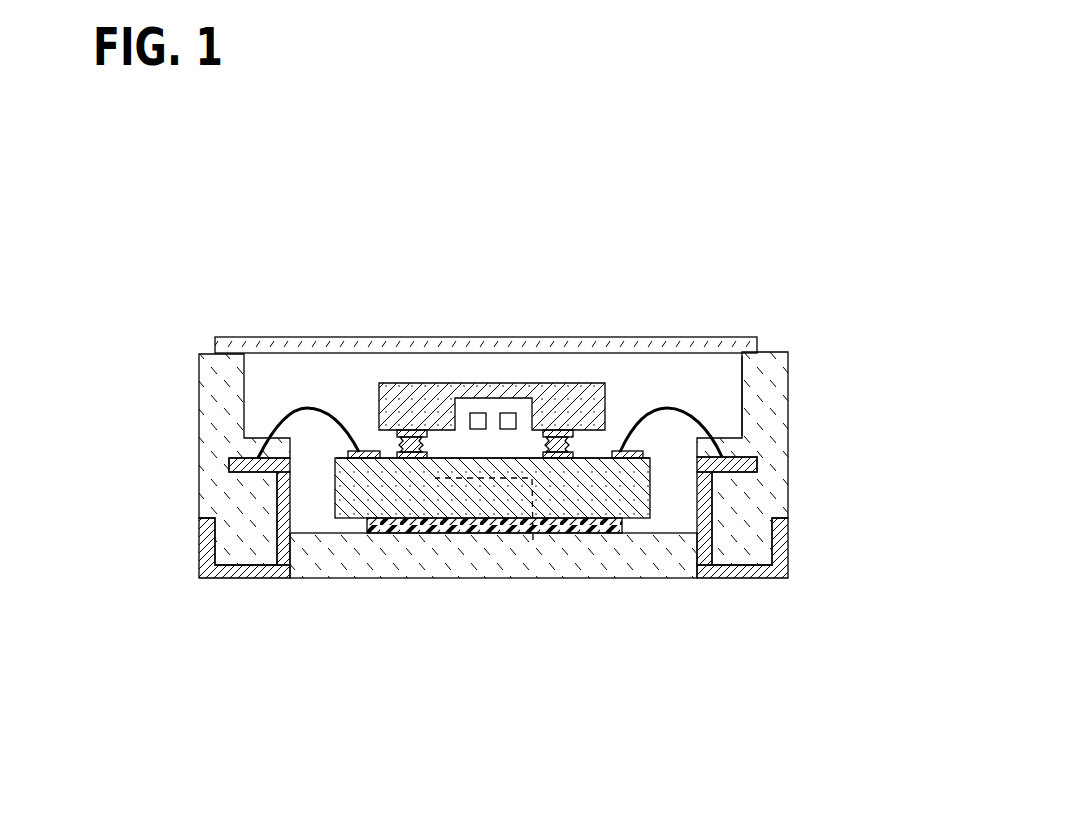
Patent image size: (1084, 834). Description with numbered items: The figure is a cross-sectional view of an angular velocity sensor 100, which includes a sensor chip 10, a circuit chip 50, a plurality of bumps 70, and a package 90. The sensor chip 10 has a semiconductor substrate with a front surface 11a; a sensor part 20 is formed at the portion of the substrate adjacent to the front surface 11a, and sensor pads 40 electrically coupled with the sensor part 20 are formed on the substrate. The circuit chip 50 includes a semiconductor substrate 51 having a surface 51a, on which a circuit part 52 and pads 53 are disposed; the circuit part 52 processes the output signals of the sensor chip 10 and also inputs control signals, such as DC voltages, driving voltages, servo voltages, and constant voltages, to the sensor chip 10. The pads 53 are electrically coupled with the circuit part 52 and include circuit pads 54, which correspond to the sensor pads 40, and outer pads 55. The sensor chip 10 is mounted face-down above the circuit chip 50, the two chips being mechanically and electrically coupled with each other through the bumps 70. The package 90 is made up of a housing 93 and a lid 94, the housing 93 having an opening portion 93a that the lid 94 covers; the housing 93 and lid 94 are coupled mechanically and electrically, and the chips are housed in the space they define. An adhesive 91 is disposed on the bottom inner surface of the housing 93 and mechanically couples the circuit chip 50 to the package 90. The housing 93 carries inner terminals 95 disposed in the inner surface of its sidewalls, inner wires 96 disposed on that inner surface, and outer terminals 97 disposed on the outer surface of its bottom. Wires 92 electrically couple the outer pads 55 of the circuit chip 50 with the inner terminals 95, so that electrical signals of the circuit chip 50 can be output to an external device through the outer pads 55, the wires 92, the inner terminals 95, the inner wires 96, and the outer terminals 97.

The angular velocity sensor 100 is at (823, 247).
The sensor chip 10 is at (590, 380).
The front surface 11a is at (393, 431).
The sensor part 20 is at (498, 437).
The sensor pads 40 is at (415, 430).
The circuit chip 50 is at (655, 496).
The semiconductor substrate 51 is at (626, 508).
The surface 51a is at (336, 460).
The circuit part 52 is at (533, 540).
The pads 53 is at (428, 635).
The circuit pads 54 is at (418, 458).
The outer pads 55 is at (367, 462).
The bumps 70 is at (580, 446).
The package 90 is at (293, 222).
The adhesive 91 is at (577, 534).
The wires 92 is at (312, 407).
The housing 93 is at (199, 372).
The opening portion 93a is at (742, 353).
The lid 94 is at (277, 337).
The inner terminals 95 is at (753, 463).
The inner wires 96 is at (713, 513).
The outer terminals 97 is at (777, 569).